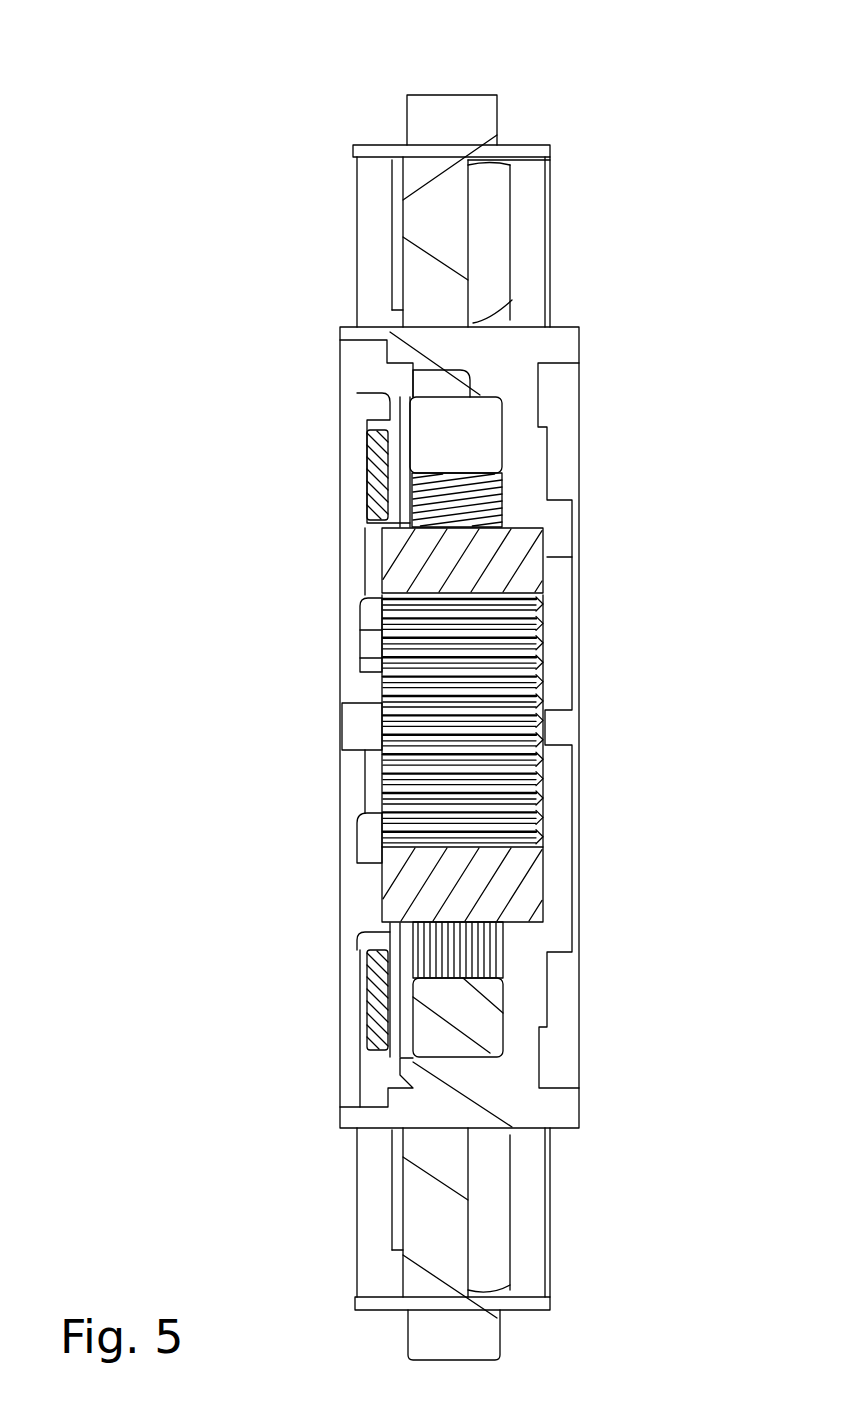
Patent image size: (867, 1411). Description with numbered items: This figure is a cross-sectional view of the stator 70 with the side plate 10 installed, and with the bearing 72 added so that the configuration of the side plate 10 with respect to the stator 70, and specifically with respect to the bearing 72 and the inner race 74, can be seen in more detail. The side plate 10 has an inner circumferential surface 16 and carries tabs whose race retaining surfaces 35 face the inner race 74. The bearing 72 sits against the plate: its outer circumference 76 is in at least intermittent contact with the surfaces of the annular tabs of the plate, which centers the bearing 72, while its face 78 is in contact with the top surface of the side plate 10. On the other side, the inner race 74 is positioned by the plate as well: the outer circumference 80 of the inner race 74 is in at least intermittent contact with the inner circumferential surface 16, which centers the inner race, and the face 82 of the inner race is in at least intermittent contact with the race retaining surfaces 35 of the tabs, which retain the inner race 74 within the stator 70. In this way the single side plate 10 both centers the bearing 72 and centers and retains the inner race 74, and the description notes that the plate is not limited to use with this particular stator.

The stator 70 is at (408, 82).
The side plate 10 is at (395, 462).
The outer circumference of bearing 76 is at (400, 430).
The face of bearing 78 is at (413, 457).
The bearing 72 is at (347, 462).
The inner circumferential surface 16 is at (382, 537).
The race retaining surface 35 is at (401, 860).
The inner race 74 is at (507, 896).
The outer circumference of inner race 80 is at (520, 927).
The face of inner race 82 is at (366, 826).